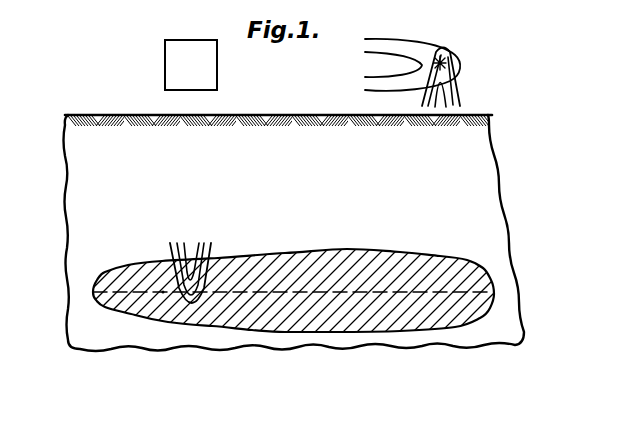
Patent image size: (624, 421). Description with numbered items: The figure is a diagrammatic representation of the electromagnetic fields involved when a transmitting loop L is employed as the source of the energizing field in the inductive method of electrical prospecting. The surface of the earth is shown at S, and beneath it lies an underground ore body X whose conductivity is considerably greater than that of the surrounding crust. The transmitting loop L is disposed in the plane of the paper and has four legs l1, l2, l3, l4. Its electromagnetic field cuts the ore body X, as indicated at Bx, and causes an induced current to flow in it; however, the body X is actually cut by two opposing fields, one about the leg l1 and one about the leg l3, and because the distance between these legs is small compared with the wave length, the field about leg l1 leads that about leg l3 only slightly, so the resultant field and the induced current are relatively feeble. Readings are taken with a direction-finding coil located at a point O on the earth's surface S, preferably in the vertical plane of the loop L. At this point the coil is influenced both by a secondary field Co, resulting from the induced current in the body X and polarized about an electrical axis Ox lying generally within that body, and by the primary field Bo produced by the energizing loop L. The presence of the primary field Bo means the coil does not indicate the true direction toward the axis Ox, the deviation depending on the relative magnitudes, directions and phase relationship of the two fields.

The transmitting loop L is at (166, 40).
The leg l1 is at (206, 90).
The leg l2 is at (165, 67).
The leg l3 is at (197, 39).
The leg l4 is at (217, 67).
The primary field Bo is at (405, 40).
The point on the earth's surface O is at (445, 58).
The secondary electromagnetic field Co is at (453, 80).
The surface of the earth S is at (282, 226).
The underground ore body X is at (477, 266).
The electromagnetic field about the loop Bx is at (211, 248).
The electrical axis Ox is at (163, 293).